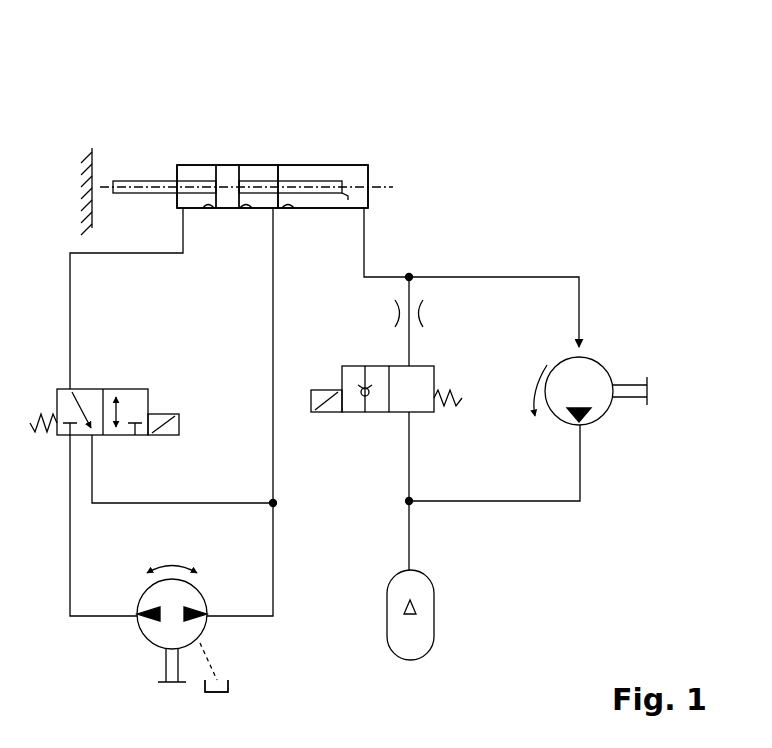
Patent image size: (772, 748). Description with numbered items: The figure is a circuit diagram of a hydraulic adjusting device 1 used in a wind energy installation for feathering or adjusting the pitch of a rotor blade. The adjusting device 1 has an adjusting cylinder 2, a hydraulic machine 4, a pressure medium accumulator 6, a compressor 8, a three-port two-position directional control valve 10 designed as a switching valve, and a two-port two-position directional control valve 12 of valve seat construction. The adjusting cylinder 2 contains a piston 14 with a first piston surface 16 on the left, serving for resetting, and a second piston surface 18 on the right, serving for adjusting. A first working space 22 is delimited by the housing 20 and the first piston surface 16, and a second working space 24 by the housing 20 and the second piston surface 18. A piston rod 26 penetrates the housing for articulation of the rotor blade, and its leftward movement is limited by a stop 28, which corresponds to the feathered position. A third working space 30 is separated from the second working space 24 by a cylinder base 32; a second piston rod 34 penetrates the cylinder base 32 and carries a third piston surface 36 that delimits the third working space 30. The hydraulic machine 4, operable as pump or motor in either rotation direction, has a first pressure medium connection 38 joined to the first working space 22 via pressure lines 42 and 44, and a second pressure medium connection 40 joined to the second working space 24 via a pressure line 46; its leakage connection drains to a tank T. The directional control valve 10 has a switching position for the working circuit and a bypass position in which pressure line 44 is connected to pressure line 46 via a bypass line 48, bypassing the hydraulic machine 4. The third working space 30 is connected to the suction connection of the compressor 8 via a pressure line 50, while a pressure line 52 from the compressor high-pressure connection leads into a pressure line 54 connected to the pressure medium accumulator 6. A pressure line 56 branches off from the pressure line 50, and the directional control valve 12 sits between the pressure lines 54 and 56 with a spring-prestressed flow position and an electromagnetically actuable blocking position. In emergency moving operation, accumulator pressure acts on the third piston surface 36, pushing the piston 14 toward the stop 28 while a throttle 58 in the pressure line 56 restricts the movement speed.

The hydraulic adjusting device 1 is at (178, 80).
The adjusting cylinder 2 is at (299, 136).
The hydraulic machine 4 is at (135, 643).
The pressure medium accumulator 6 is at (434, 608).
The compressor 8 is at (610, 358).
The 3/2-port directional control valve 10 is at (133, 382).
The 2/2-port directional control valve 12 is at (443, 362).
The piston 14 is at (227, 165).
The first piston surface 16 is at (214, 207).
The second piston surface 18 is at (239, 207).
The housing 20 is at (318, 165).
The first working space 22 is at (197, 165).
The second working space 24 is at (265, 165).
The piston rod 26 is at (142, 181).
The stop 28 is at (92, 150).
The third working space 30 is at (331, 206).
The cylinder base 32 is at (282, 207).
The second piston rod 34 is at (342, 181).
The third piston surface 36 is at (348, 195).
The first pressure medium connection 38 is at (137, 610).
The second pressure medium connection 40 is at (208, 610).
The pressure line 42 is at (70, 535).
The pressure line 44 is at (71, 320).
The pressure line 46 is at (273, 350).
The bypass line 48 is at (203, 503).
The pressure line 50 is at (365, 235).
The pressure line 52 is at (552, 501).
The pressure line 54 is at (409, 533).
The pressure line 56 is at (409, 350).
The throttle 58 is at (418, 312).
The tank T is at (228, 686).